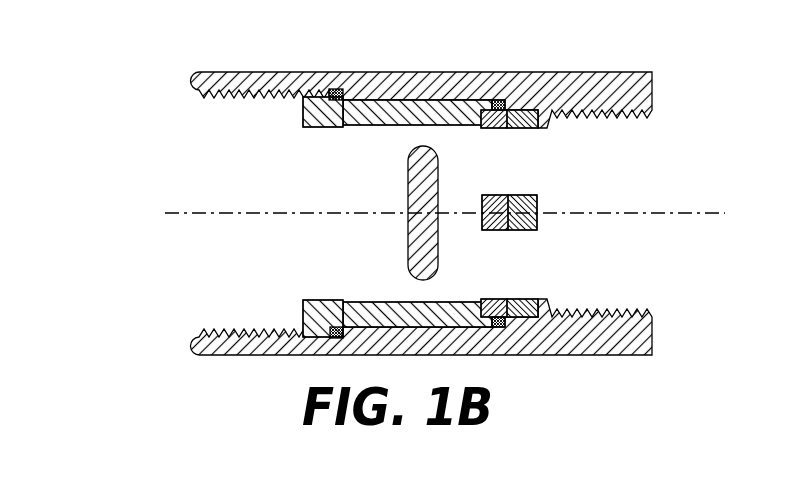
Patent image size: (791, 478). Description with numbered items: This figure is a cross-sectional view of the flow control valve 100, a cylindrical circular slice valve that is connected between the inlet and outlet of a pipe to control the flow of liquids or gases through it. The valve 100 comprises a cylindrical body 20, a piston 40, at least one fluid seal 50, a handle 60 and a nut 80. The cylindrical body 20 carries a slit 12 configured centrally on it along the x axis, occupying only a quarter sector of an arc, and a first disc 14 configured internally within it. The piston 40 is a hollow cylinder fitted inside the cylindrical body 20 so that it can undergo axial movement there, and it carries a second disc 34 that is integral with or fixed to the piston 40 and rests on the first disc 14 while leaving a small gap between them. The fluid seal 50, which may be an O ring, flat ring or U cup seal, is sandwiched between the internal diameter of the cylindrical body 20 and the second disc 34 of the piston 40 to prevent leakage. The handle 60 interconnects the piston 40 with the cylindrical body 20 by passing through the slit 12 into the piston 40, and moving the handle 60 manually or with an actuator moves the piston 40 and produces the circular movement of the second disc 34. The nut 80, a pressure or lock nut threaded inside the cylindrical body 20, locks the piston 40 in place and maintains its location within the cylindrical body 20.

The flow control valve 100 is at (404, 210).
The cylindrical body 20 is at (578, 66).
The first disc 14 is at (551, 125).
The piston 40 is at (363, 129).
The fluid seal 50 is at (346, 89).
The second disc 34 is at (497, 131).
The slit 12 is at (405, 217).
The handle 60 is at (541, 230).
The nut 80 is at (314, 315).